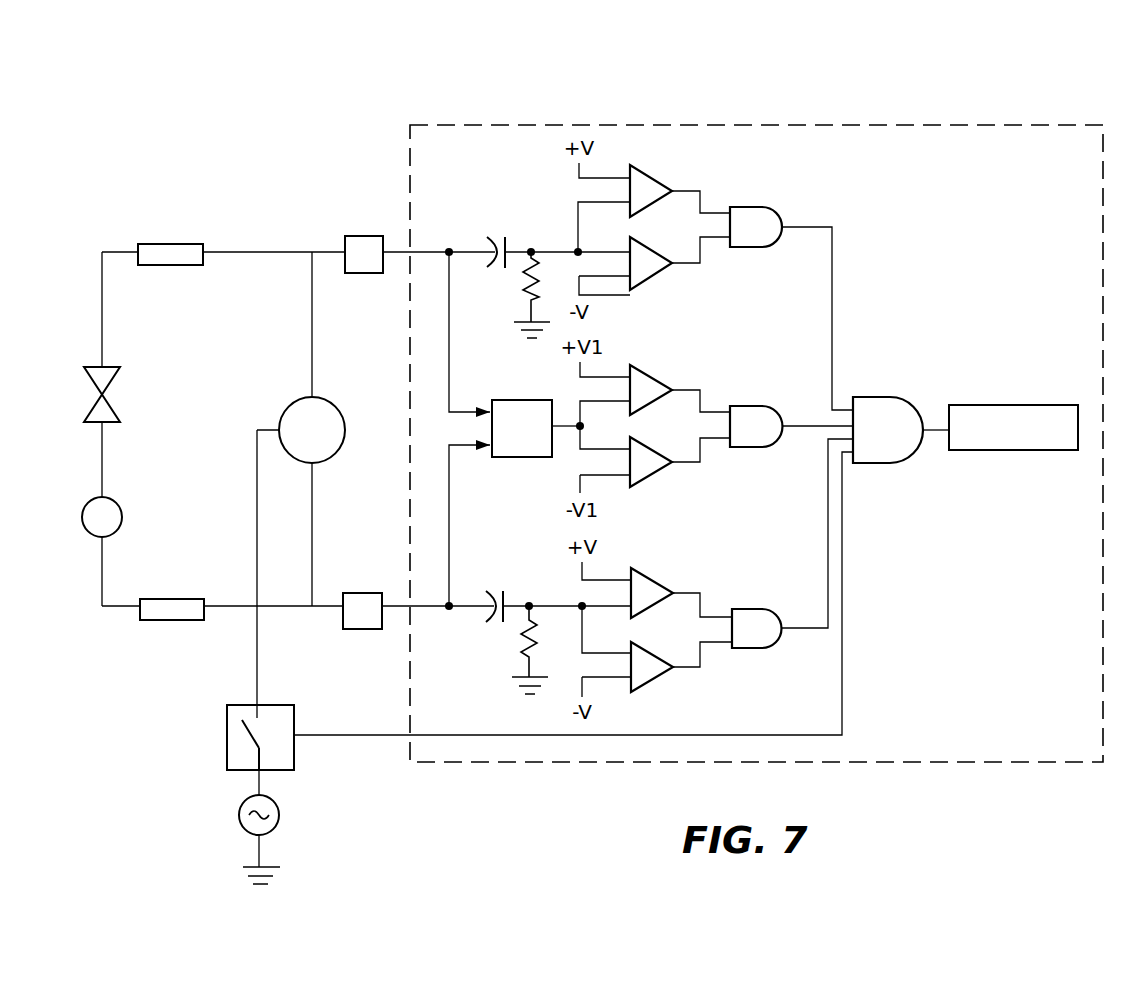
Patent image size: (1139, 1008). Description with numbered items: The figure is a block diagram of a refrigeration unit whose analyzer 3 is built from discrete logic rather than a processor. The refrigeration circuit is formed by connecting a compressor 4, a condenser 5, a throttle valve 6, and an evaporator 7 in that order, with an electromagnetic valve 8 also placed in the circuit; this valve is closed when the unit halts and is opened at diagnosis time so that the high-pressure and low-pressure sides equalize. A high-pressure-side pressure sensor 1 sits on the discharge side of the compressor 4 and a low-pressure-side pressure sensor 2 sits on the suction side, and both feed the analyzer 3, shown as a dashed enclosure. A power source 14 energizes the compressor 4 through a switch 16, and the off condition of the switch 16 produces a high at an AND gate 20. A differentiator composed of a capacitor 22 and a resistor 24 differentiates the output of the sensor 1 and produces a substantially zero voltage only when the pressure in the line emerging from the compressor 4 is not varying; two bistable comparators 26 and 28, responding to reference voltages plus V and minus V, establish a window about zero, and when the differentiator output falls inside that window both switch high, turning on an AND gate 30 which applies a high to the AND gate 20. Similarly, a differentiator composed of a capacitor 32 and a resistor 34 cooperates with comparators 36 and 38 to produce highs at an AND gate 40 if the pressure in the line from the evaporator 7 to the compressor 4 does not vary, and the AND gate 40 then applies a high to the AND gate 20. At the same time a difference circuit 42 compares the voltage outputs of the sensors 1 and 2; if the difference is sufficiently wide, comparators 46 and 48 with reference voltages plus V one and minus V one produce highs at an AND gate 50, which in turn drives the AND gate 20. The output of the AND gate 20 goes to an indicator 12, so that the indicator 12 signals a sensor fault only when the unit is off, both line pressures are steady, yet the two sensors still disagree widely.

The high-pressure-side pressure sensor 1 is at (365, 236).
The low-pressure-side pressure sensor 2 is at (364, 593).
The analyzer 3 is at (408, 153).
The compressor 4 is at (337, 412).
The condenser 5 is at (178, 244).
The throttle valve 6 is at (122, 517).
The evaporator 7 is at (170, 599).
The electromagnetic valve 8 is at (110, 388).
The indicator 12 is at (1017, 405).
The power source 14 is at (280, 815).
The switch 16 is at (295, 713).
The AND gate 20 is at (895, 397).
The capacitor 22 is at (490, 245).
The resistor 24 is at (527, 290).
The comparator 26 is at (657, 183).
The comparator 28 is at (657, 270).
The AND gate 30 is at (776, 217).
The capacitor 32 is at (490, 590).
The resistor 34 is at (525, 645).
The comparator 36 is at (658, 581).
The comparator 38 is at (658, 678).
The AND gate 40 is at (772, 609).
The difference circuit 42 is at (524, 458).
The comparator 46 is at (657, 380).
The comparator 48 is at (657, 470).
The AND gate 50 is at (752, 406).